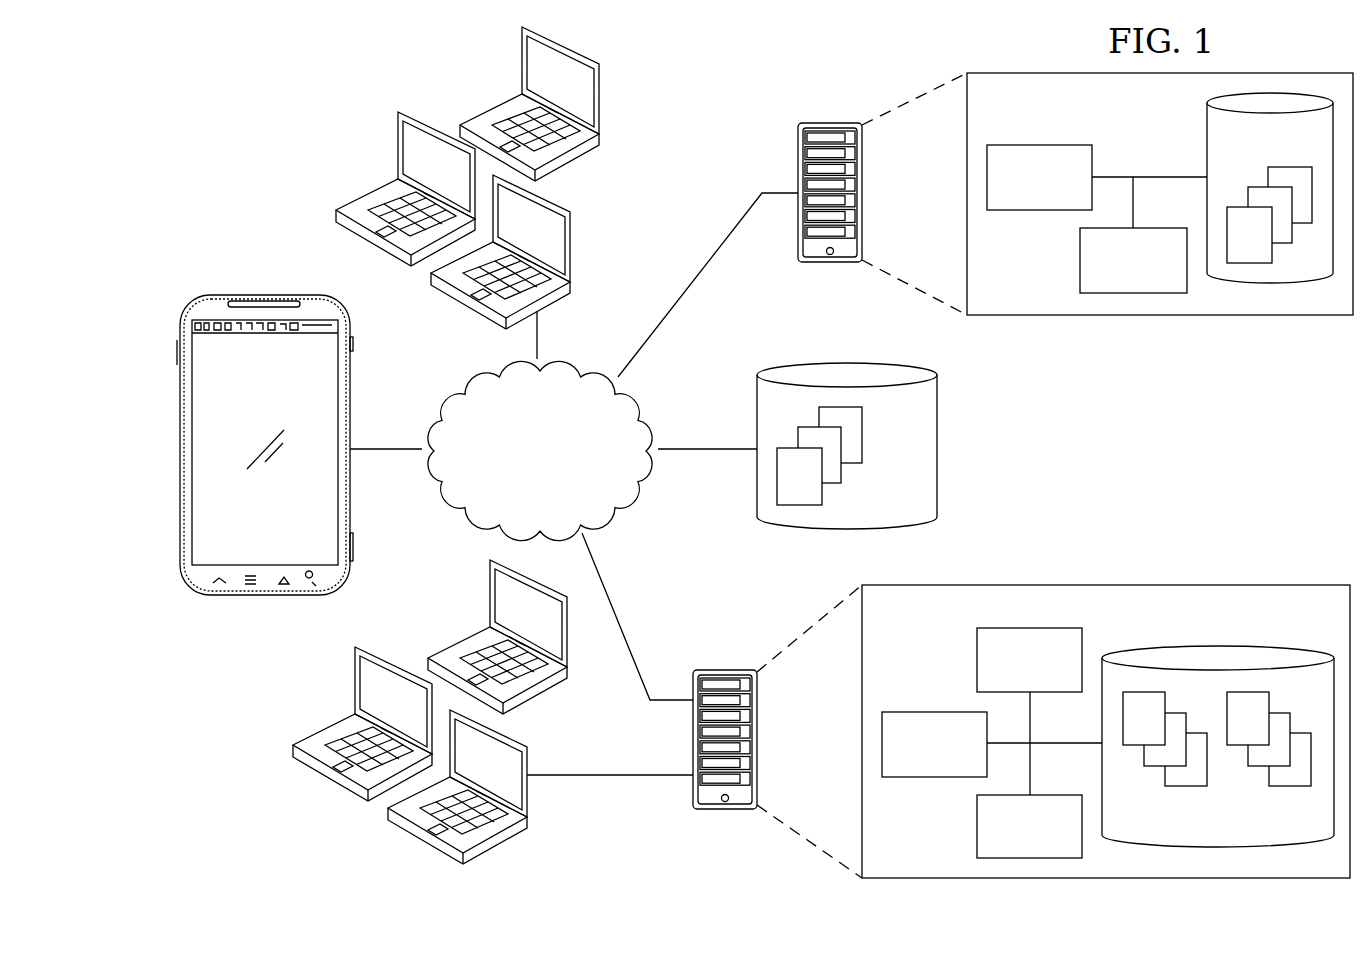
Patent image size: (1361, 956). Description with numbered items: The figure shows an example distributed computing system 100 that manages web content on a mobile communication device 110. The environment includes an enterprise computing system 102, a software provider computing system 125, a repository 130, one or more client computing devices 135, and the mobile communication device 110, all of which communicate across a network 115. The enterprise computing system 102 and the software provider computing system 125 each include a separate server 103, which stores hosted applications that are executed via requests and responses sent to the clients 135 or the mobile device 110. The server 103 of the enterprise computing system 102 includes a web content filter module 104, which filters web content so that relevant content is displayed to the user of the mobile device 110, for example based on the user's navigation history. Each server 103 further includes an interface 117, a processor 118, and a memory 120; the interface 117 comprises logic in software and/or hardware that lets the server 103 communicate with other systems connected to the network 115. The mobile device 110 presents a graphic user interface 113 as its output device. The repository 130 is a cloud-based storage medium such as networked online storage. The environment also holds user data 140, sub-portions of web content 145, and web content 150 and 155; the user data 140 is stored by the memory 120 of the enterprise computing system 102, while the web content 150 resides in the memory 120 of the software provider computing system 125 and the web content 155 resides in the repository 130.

The distributed computing system 100 is at (230, 103).
The enterprise computing system 102 is at (746, 811).
The server 103 is at (813, 466).
The web content filter module 104 is at (1011, 672).
The mobile communication device 110 is at (231, 415).
The graphic user interface 113 is at (200, 386).
The network 115 is at (556, 464).
The interface 117 is at (1114, 274).
The processor 118 is at (1021, 191).
The memory 120 is at (1218, 470).
The software provider computing system 125 is at (844, 118).
The repository 130 is at (887, 446).
The client computing devices 135 is at (438, 102).
The user data 140 is at (1151, 771).
The sub-portions of web content 145 is at (1256, 771).
The web content 150 is at (1256, 184).
The web content 155 is at (846, 471).